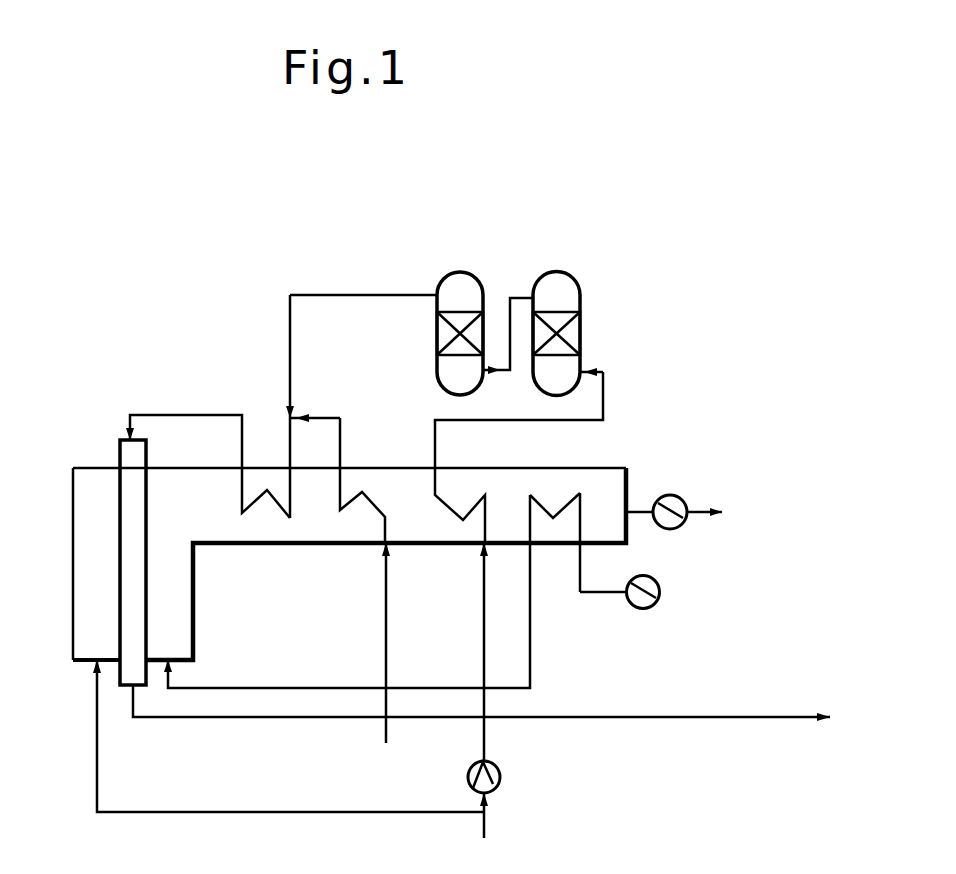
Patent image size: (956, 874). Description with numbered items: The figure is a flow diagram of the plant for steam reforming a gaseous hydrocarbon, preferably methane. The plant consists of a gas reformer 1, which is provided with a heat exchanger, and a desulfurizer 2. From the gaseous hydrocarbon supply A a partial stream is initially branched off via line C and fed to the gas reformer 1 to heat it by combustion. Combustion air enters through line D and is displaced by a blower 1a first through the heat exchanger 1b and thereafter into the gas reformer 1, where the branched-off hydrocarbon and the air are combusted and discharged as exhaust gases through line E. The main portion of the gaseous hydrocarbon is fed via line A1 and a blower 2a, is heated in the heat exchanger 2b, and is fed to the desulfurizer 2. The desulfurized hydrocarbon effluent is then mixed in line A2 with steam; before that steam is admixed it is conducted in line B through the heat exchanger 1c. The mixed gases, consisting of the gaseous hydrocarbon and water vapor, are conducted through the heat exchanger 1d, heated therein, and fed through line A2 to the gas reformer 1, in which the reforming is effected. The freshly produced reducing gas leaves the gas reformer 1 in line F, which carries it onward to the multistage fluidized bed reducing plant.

The gas reformer 1 is at (73, 557).
The blower 1a is at (660, 597).
The heat exchanger 1b is at (580, 493).
The heat exchanger 1c is at (365, 490).
The heat exchanger 1d is at (241, 503).
The desulfurizer 2 is at (532, 290).
The blower 2a is at (500, 775).
The heat exchanger 2b is at (486, 488).
The gaseous hydrocarbon supply A is at (484, 822).
The line A1 is at (484, 612).
The line A2 is at (353, 295).
The line B is at (386, 633).
The line C is at (326, 813).
The line D is at (595, 592).
The line E is at (674, 524).
The line F is at (606, 717).